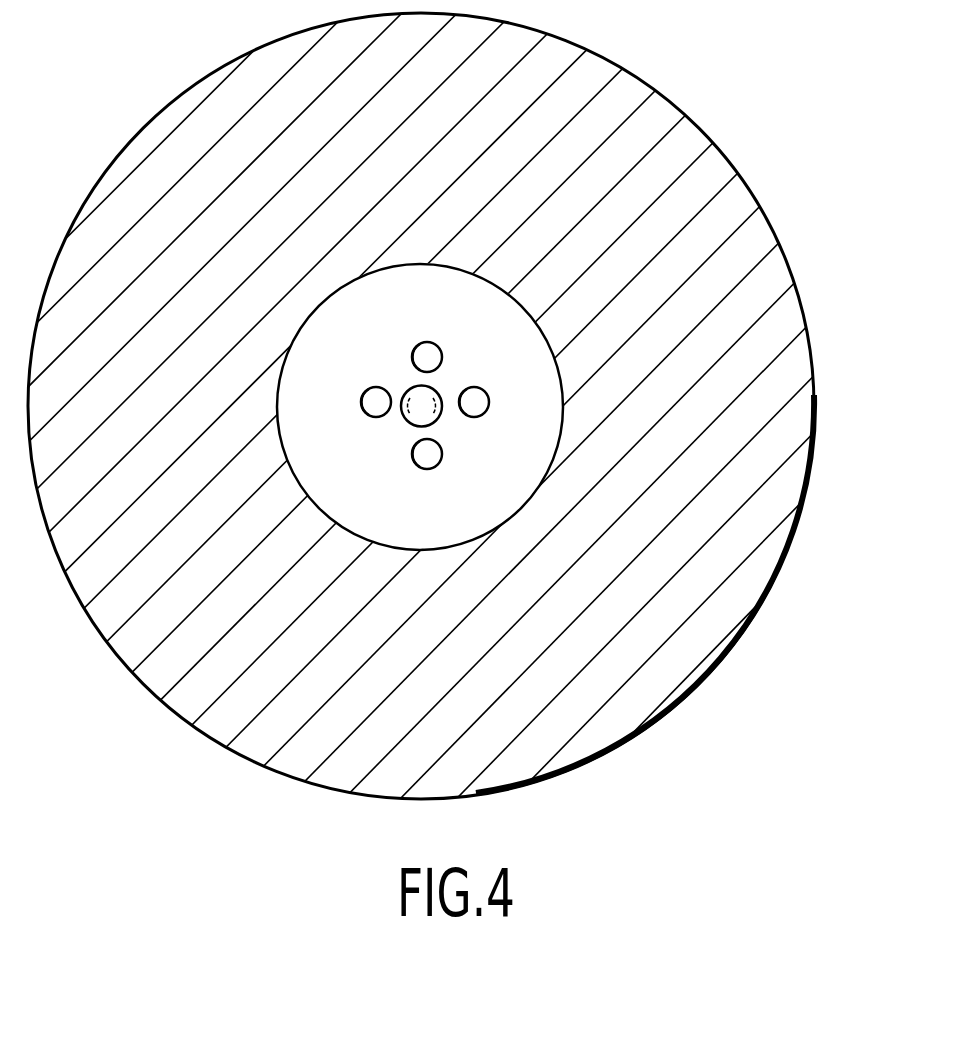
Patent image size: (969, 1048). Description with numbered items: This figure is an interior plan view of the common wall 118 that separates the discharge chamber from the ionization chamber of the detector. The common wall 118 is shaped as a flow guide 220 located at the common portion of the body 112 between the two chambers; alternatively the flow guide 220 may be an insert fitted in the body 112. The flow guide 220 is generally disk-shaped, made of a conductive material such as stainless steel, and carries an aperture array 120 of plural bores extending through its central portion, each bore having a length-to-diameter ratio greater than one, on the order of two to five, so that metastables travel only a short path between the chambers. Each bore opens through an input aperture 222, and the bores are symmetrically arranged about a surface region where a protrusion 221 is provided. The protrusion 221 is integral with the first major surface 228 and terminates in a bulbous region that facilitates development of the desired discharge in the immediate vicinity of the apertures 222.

The body 112 is at (710, 146).
The common wall 118 is at (535, 398).
The aperture array 120 is at (462, 452).
The flow guide 220 is at (782, 722).
The protrusion 221 is at (404, 390).
The input aperture 222 is at (478, 388).
The first major surface 228 is at (436, 313).